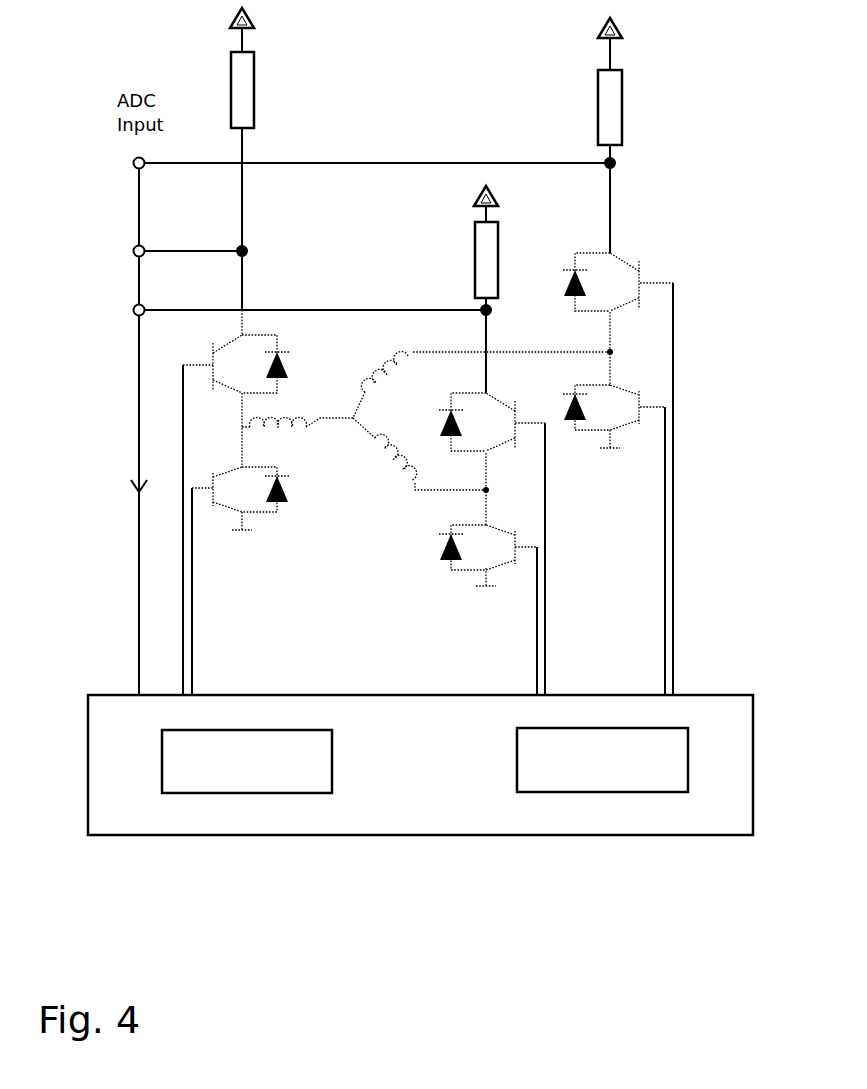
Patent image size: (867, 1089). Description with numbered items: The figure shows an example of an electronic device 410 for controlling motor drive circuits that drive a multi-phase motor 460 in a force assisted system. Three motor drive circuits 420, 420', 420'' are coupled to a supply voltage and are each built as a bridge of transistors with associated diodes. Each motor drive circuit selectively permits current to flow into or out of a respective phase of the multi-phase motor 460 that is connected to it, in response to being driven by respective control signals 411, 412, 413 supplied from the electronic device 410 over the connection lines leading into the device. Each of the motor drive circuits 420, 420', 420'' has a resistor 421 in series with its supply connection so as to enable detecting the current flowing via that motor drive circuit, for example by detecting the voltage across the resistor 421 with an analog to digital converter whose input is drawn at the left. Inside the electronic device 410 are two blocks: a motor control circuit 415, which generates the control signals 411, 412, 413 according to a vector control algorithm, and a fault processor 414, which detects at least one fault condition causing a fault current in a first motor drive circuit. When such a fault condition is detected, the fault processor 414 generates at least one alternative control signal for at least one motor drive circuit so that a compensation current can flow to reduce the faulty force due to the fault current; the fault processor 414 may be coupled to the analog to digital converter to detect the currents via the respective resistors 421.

The electronic device 410 is at (423, 835).
The control signal 411 is at (188, 652).
The control signal 412 is at (540, 620).
The control signal 413 is at (670, 628).
The fault processor 414 is at (247, 761).
The motor control circuit 415 is at (602, 760).
The motor drive circuit 420 is at (270, 371).
The motor drive circuit 420' is at (505, 386).
The motor drive circuit 420'' is at (655, 233).
The resistor 421 is at (254, 92).
The multi-phase motor 460 is at (308, 432).